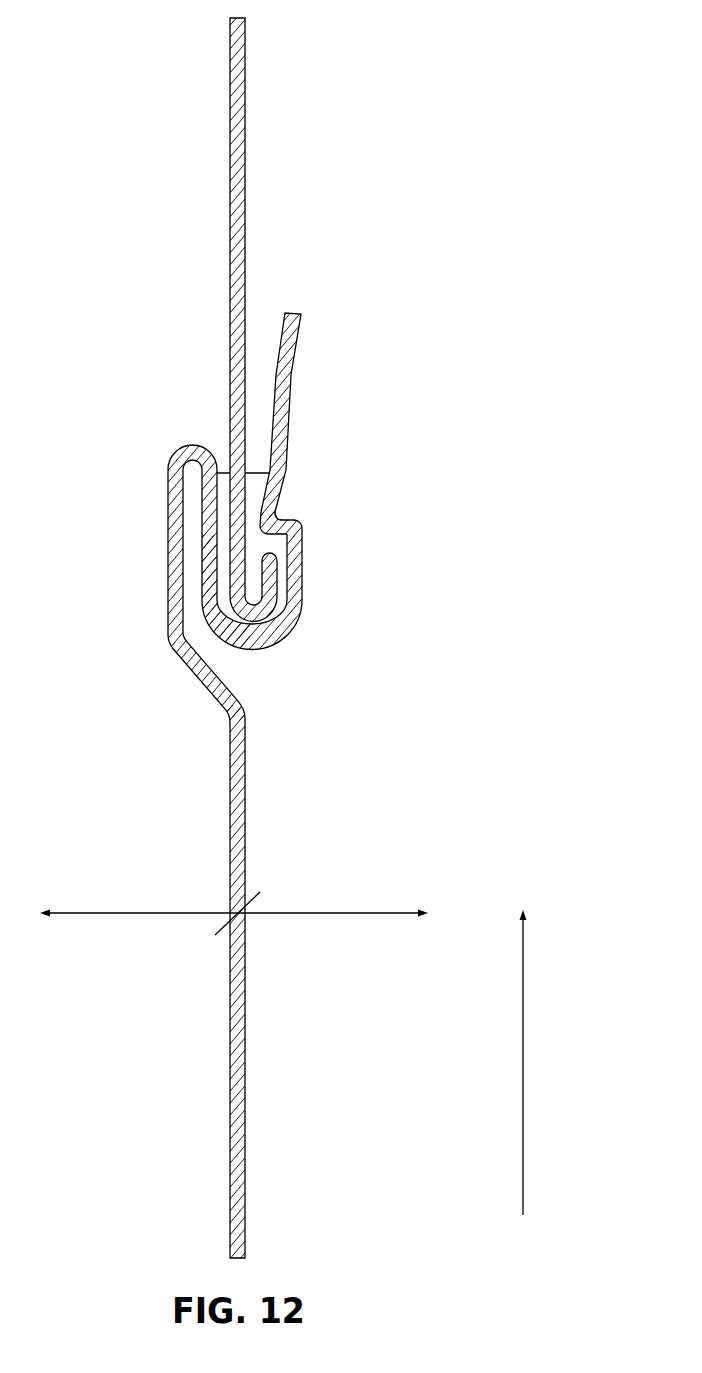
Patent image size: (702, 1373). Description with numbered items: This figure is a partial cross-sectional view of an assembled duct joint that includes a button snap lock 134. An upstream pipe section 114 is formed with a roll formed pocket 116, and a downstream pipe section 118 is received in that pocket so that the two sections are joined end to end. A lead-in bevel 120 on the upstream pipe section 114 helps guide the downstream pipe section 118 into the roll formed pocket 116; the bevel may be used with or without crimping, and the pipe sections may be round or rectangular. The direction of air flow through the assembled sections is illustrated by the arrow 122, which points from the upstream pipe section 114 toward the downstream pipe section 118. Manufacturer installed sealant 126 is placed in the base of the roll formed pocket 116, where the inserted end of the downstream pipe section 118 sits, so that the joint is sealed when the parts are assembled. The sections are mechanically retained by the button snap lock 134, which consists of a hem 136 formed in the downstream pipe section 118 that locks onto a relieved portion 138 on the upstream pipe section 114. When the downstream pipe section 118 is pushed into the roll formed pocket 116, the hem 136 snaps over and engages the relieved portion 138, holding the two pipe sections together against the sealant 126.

The upstream pipe section 114 is at (215, 988).
The roll formed pocket 116 is at (152, 552).
The downstream pipe section 118 is at (217, 192).
The lead-in bevel 120 is at (307, 337).
The arrow 122 is at (523, 1078).
The manufacturer installed sealant 126 is at (315, 592).
The button snap lock 134 is at (293, 502).
The hem 136 is at (258, 652).
The relieved portion 138 is at (305, 528).